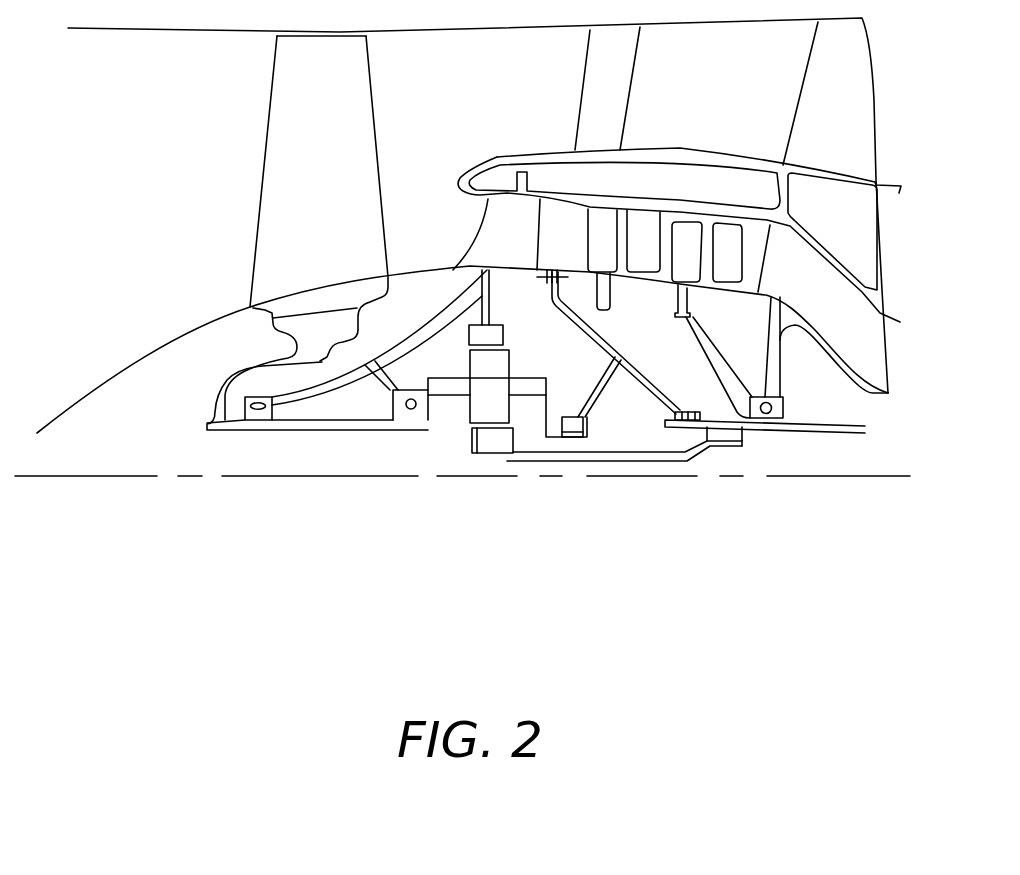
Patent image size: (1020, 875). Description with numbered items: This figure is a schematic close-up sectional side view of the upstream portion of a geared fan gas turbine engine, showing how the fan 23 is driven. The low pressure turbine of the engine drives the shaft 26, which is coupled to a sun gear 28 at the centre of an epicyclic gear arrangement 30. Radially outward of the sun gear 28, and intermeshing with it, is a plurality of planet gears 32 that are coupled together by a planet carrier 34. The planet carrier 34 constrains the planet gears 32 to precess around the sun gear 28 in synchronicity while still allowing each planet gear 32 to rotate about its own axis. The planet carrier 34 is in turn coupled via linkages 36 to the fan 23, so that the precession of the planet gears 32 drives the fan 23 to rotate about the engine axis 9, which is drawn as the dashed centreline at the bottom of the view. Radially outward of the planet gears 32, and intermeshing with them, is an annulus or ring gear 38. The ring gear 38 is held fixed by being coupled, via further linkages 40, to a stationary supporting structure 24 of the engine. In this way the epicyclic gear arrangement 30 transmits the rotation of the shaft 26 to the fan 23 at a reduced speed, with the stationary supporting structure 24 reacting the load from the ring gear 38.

The engine axis 9 is at (135, 476).
The fan 23 is at (293, 171).
The stationary supporting structure 24 is at (493, 226).
The shaft 26 is at (625, 455).
The sun gear 28 is at (492, 440).
The epicyclic gear arrangement 30 is at (453, 422).
The planet gears 32 is at (479, 410).
The planet carrier 34 is at (545, 408).
The linkages 36 is at (433, 421).
The ring gear 38 is at (493, 335).
The linkages 40 is at (490, 303).